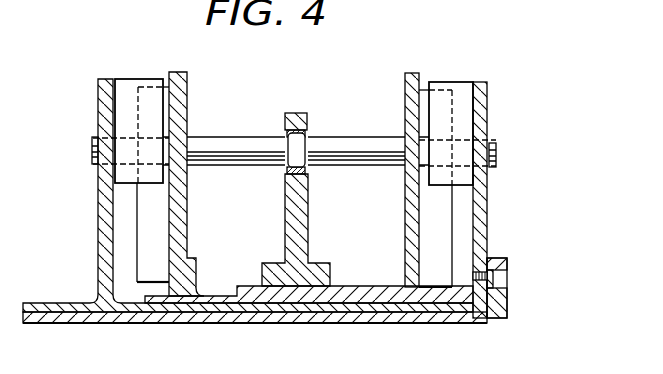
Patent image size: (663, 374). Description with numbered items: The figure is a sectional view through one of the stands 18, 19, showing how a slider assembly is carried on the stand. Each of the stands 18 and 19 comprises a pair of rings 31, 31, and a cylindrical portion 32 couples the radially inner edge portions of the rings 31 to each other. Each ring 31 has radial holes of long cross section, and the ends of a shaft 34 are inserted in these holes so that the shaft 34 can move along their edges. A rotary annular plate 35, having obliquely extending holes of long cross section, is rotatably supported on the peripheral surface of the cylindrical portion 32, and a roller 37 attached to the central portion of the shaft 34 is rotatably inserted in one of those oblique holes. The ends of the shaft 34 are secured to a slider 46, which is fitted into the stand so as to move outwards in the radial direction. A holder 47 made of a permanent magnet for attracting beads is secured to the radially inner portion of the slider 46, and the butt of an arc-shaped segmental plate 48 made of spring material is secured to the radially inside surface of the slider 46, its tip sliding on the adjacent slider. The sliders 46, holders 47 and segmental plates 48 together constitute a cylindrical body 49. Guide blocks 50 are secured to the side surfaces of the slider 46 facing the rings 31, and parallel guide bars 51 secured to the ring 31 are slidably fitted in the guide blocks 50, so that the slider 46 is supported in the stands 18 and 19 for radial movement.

The stand 18 is at (220, 176).
The stand 19 is at (187, 90).
The ring 31 is at (294, 176).
The cylindrical portion 32 is at (360, 286).
The shaft 34 is at (241, 143).
The rotary annular plate 35 is at (303, 218).
The roller 37 is at (305, 172).
The slider 46 is at (489, 194).
The holder 47 is at (508, 308).
The segmental plate 48 is at (417, 323).
The cylindrical body 49 is at (292, 325).
The guide block 50 is at (125, 88).
The guide bar 51 is at (143, 233).